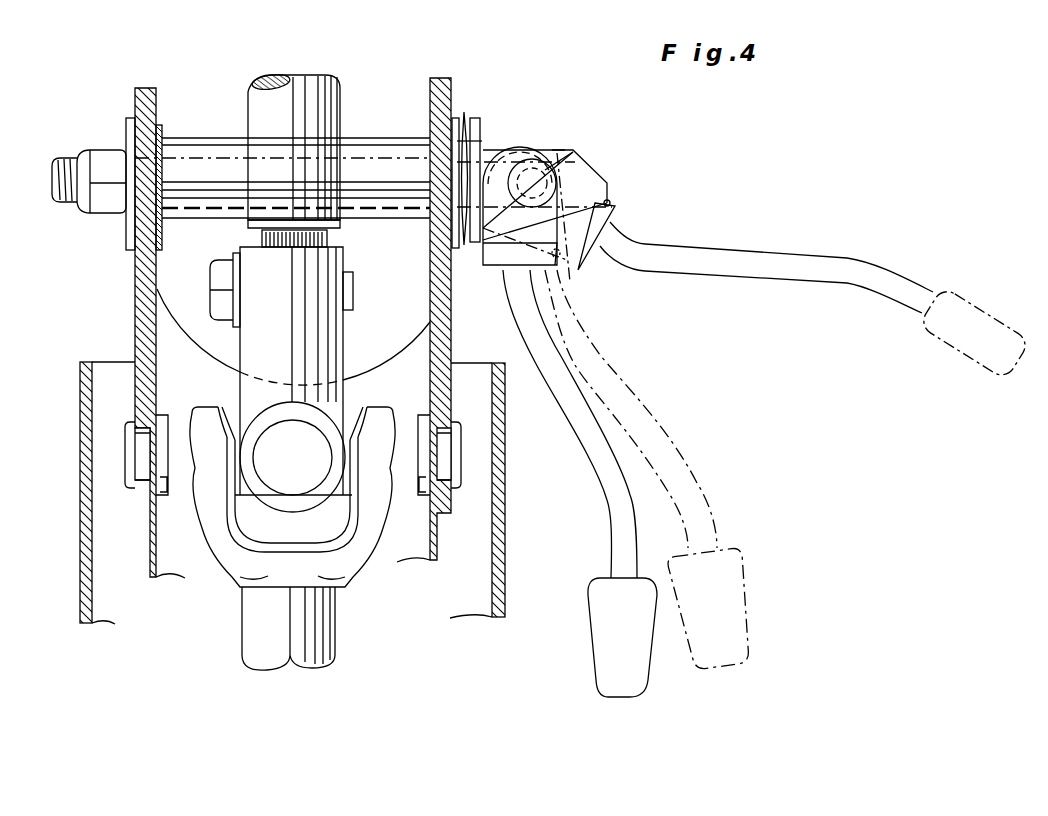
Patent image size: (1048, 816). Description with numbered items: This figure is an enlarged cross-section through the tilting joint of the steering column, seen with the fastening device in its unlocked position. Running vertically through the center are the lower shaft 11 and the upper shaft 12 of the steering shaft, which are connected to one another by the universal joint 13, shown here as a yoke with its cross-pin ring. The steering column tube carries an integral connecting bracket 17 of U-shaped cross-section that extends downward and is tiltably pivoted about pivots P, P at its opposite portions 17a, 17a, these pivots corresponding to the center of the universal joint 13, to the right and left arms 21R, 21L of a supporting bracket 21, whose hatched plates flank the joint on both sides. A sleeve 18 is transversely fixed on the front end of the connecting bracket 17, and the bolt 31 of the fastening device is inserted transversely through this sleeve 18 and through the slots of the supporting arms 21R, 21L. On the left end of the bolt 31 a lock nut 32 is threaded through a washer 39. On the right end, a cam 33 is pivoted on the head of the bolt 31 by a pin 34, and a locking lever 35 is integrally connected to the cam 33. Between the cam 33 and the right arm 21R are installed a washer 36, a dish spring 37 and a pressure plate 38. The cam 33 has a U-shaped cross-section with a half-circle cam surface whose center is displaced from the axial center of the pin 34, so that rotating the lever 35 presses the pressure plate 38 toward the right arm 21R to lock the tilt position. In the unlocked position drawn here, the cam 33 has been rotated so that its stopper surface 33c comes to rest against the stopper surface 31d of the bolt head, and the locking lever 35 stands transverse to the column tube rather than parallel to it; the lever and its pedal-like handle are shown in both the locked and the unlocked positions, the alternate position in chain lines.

The lower shaft 11 is at (256, 103).
The upper shaft 12 is at (254, 626).
The universal joint 13 is at (223, 404).
The connecting bracket 17 is at (150, 550).
The opposite portions of connecting bracket 17a is at (162, 480).
The sleeve 18 is at (373, 150).
The supporting bracket 21 is at (124, 104).
The left arm 21L is at (137, 348).
The right arm 21R is at (448, 380).
The bolt 31 is at (58, 160).
The stopper surface 31d is at (610, 204).
The lock nut 32 is at (104, 214).
The cam 33 is at (498, 262).
The stopper surface of cam 33c is at (563, 250).
The pin 34 is at (536, 180).
The locking lever 35 is at (610, 548).
The washer 36 is at (457, 128).
The dish spring 37 is at (466, 248).
The pressure plate 38 is at (478, 126).
The washer 39 is at (130, 240).
The pivot P is at (142, 458).